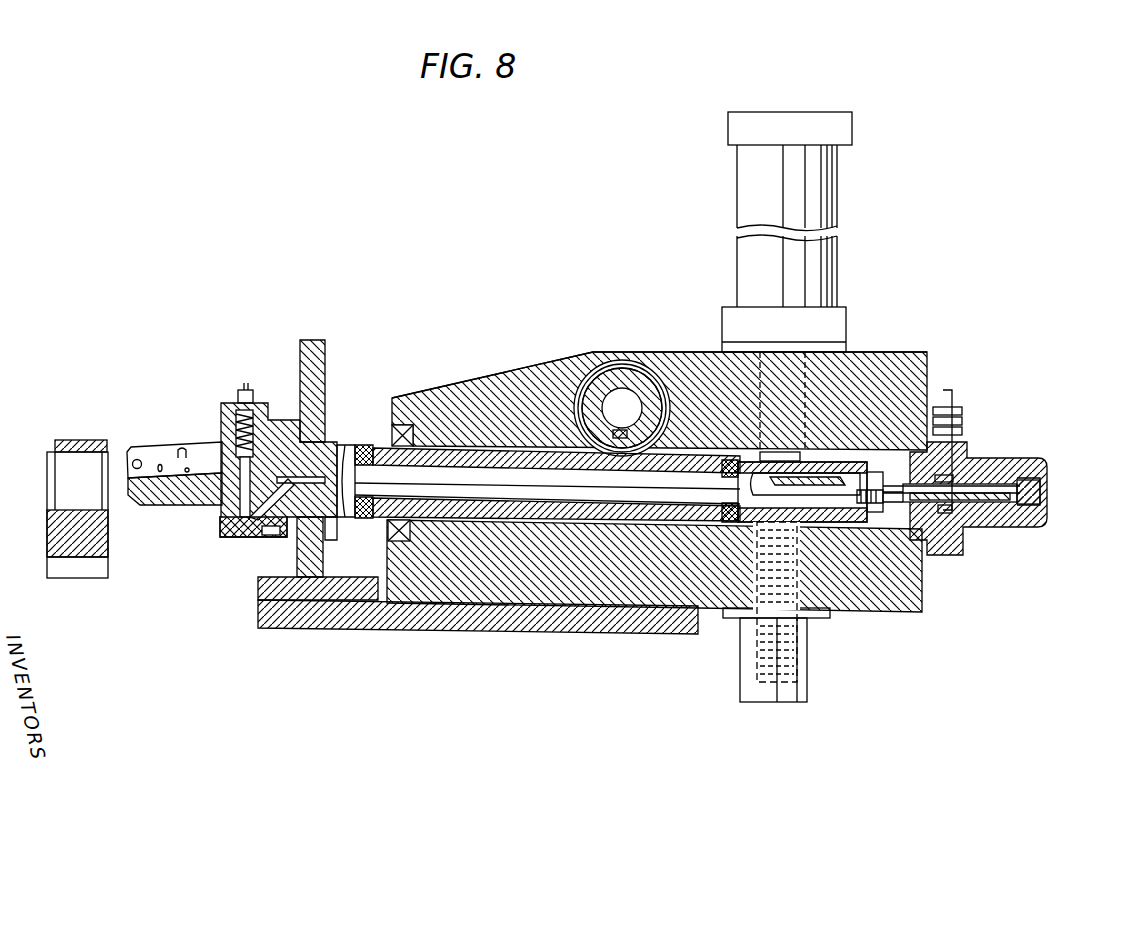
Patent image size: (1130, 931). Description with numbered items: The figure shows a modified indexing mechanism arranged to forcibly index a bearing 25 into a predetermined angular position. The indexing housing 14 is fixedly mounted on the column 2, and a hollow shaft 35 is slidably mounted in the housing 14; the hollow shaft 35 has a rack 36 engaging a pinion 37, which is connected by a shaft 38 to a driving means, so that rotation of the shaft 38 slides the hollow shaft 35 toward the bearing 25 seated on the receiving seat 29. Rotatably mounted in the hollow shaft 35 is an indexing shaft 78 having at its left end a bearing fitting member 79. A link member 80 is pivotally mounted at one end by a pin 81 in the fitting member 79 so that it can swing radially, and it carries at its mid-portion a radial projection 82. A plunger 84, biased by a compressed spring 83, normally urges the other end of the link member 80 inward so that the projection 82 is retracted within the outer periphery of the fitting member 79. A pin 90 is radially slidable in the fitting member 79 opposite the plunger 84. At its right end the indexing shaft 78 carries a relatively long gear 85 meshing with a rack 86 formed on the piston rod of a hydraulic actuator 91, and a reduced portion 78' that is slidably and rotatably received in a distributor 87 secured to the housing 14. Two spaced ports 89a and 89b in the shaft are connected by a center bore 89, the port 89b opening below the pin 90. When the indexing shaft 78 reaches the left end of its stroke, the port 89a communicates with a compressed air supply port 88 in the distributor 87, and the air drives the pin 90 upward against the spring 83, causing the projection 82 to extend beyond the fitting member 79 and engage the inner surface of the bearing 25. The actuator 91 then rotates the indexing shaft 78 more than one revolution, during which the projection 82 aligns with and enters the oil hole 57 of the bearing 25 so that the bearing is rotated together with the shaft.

The column 2 is at (448, 620).
The indexing housing 14 is at (568, 588).
The bearing 25 is at (60, 442).
The receiving seat 29 is at (46, 526).
The hollow shaft 35 is at (457, 410).
The rack 36 is at (686, 442).
The pinion 37 is at (581, 353).
The shaft 38 is at (632, 375).
The oil hole 57 is at (77, 440).
The indexing shaft 78 is at (538, 482).
The reduced portion 78' is at (992, 486).
The bearing fitting member 79 is at (175, 506).
The link member 80 is at (155, 455).
The pin 81 is at (137, 458).
The projection 82 is at (183, 449).
The compressed spring 83 is at (262, 421).
The plunger 84 is at (278, 470).
The gear 85 is at (845, 530).
The rack 86 is at (756, 556).
The distributor 87 is at (1012, 462).
The compressed air supply port 88 is at (956, 420).
The center bore 89 is at (978, 500).
The port 89a is at (1042, 458).
The port 89b is at (257, 538).
The pin 90 is at (238, 537).
The hydraulic actuator 91 is at (820, 283).